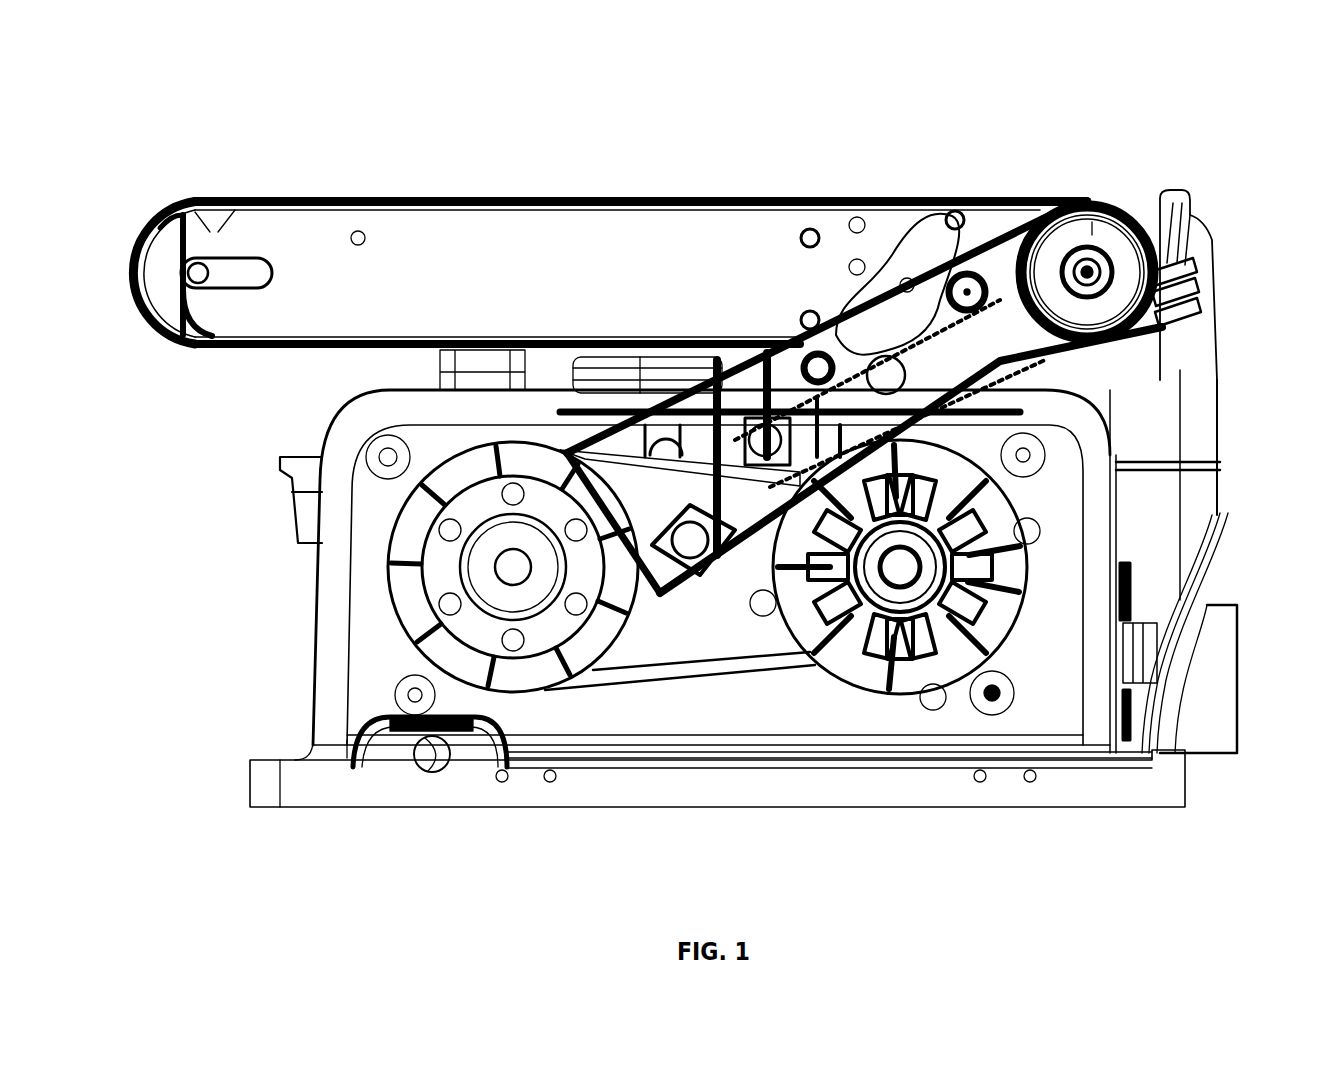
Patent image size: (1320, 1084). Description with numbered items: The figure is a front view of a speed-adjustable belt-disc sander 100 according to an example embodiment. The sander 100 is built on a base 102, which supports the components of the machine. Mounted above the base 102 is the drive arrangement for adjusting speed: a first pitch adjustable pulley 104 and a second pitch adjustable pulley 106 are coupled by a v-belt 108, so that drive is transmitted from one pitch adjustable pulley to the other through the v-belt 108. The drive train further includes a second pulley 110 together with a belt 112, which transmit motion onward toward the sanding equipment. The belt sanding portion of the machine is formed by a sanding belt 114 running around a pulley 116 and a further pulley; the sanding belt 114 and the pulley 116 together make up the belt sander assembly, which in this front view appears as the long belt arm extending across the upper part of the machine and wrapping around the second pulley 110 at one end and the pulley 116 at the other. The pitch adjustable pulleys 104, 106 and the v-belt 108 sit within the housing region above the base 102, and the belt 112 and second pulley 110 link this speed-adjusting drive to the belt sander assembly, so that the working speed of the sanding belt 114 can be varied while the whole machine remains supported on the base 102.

The speed-adjustable belt-disc sander 100 is at (1228, 92).
The base 102 is at (345, 427).
The first pitch adjustable pulley 104 is at (1000, 645).
The second pitch adjustable pulley 106 is at (415, 600).
The v-belt 108 is at (672, 670).
The second pulley 110 is at (1095, 233).
The belt 112 is at (913, 340).
The sanding belt 114 is at (523, 203).
The pulley 116 is at (165, 248).